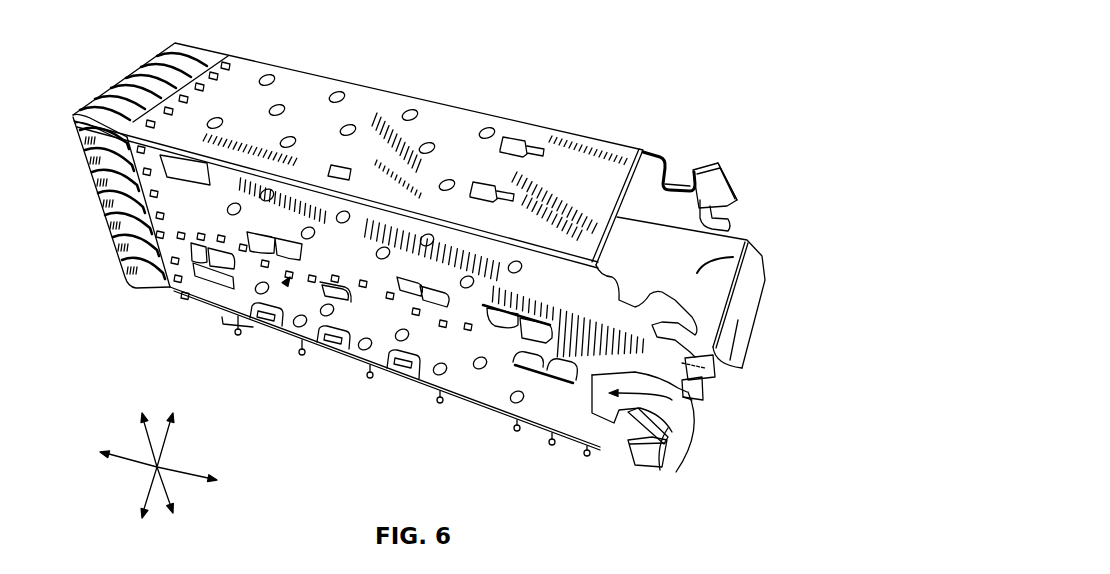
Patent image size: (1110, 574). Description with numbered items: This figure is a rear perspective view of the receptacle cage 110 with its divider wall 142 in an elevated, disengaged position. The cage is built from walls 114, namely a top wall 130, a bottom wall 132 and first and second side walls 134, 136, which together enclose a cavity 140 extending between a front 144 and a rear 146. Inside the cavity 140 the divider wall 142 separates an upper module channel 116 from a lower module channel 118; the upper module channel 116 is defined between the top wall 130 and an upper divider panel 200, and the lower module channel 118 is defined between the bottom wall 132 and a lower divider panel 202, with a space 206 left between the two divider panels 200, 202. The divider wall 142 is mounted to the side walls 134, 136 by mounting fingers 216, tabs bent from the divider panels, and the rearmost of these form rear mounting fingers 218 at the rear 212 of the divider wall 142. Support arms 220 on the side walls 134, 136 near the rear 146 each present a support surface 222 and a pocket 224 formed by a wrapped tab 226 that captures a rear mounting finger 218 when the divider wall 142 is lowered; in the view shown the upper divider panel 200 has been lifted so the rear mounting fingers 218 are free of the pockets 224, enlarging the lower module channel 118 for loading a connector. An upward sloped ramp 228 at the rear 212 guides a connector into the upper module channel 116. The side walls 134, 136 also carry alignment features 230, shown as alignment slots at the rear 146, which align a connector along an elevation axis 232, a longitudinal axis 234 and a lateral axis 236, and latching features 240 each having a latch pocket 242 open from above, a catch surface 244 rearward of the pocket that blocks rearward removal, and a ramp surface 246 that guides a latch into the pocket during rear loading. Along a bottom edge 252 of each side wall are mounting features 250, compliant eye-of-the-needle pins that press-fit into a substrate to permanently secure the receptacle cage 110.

The receptacle cage 110 is at (351, 60).
The walls 114 is at (432, 130).
The upper module channel 116 is at (640, 192).
The lower module channel 118 is at (672, 400).
The top wall 130 is at (375, 108).
The bottom wall 132 is at (283, 340).
The first side wall 134 is at (485, 120).
The second side wall 136 is at (337, 348).
The cavity 140 is at (652, 243).
The divider wall 142 is at (720, 298).
The front 144 is at (110, 240).
The rear 146 is at (674, 472).
The upper divider panel 200 is at (697, 280).
The lower divider panel 202 is at (480, 323).
The space 206 is at (286, 283).
The rear 212 is at (747, 310).
The mounting fingers 216 is at (515, 345).
The rear mounting fingers 218 is at (745, 238).
The support arms 220 is at (708, 358).
The support surface 222 is at (704, 382).
The pocket 224 is at (672, 392).
The tab 226 is at (692, 400).
The ramp 228 is at (742, 343).
The alignment features 230 is at (735, 211).
The elevation axis 232 is at (167, 493).
The longitudinal axis 234 is at (180, 468).
The lateral axis 236 is at (150, 497).
The latching features 240 is at (702, 168).
The latch pocket 242 is at (677, 168).
The catch surface 244 is at (688, 162).
The ramp surface 246 is at (732, 186).
The mounting features 250 is at (373, 380).
The bottom edge 252 is at (408, 385).